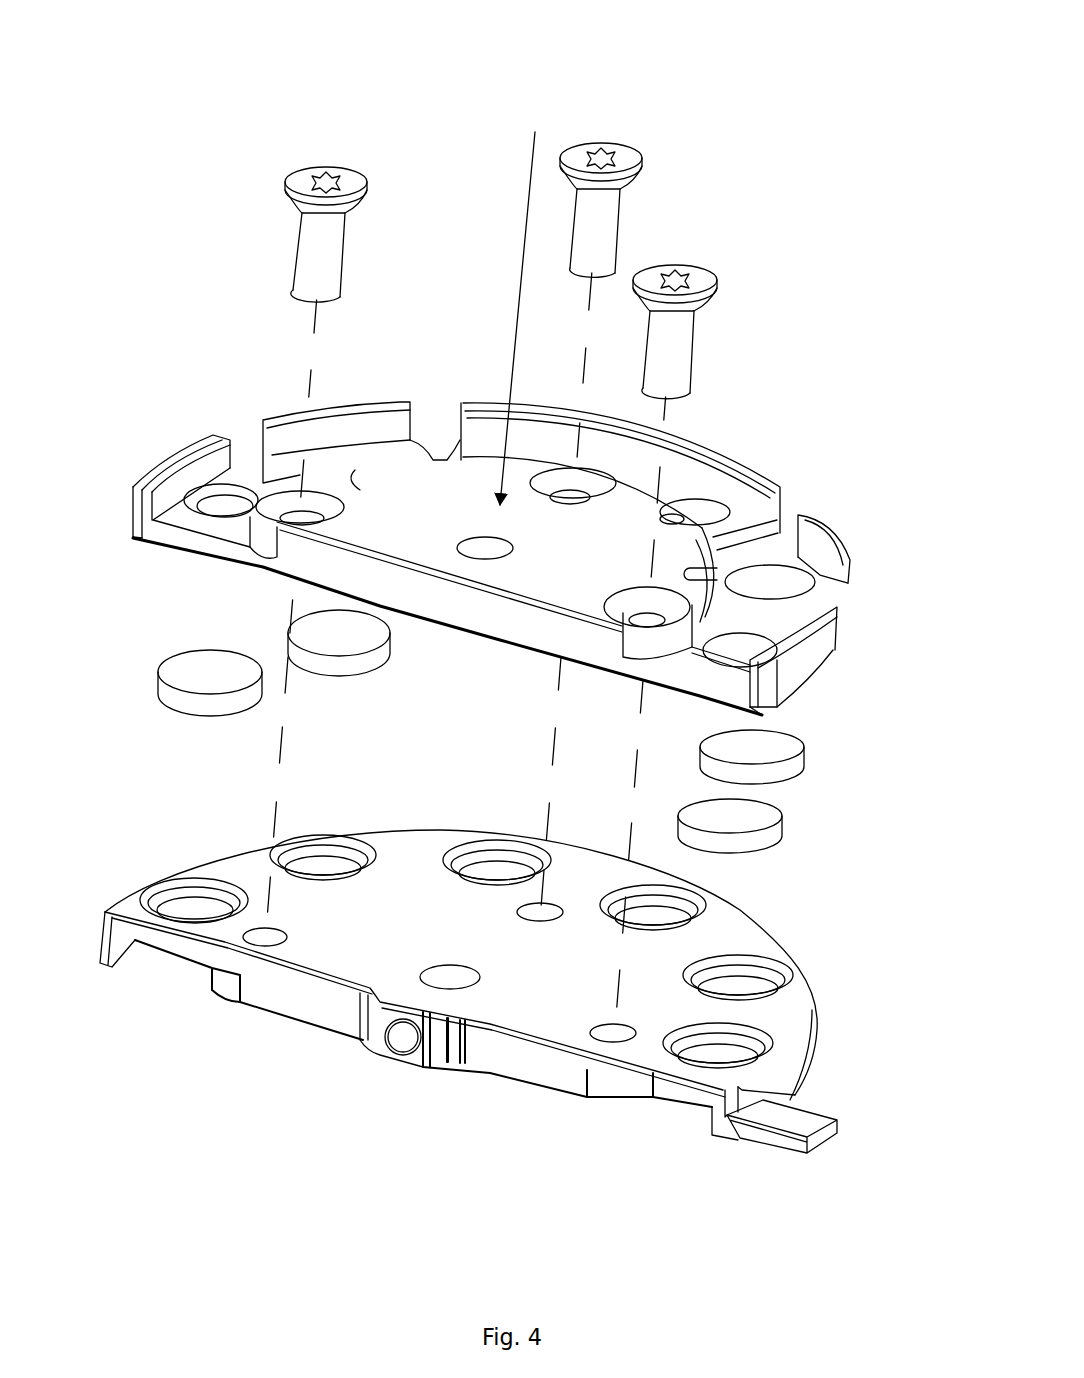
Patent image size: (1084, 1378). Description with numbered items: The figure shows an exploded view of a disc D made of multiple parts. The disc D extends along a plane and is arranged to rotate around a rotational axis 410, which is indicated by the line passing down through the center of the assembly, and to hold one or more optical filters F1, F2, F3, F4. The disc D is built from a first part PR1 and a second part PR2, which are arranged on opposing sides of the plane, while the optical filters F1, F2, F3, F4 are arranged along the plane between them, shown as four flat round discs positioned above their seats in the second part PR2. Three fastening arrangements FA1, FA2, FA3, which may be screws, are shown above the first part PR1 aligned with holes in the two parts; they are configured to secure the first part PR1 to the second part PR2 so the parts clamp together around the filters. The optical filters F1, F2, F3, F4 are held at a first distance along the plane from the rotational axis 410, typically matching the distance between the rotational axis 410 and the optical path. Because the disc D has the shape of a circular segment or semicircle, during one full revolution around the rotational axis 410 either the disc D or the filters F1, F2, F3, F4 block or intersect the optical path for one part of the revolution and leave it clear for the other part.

The disc D is at (463, 200).
The rotational axis 410 is at (535, 130).
The fastening arrangement FA1 is at (300, 167).
The fastening arrangement FA2 is at (612, 143).
The fastening arrangement FA3 is at (697, 283).
The first part PR1 is at (183, 453).
The second part PR2 is at (183, 860).
The optical filter F1 is at (762, 840).
The optical filter F2 is at (792, 772).
The optical filter F3 is at (307, 647).
The optical filter F4 is at (170, 698).